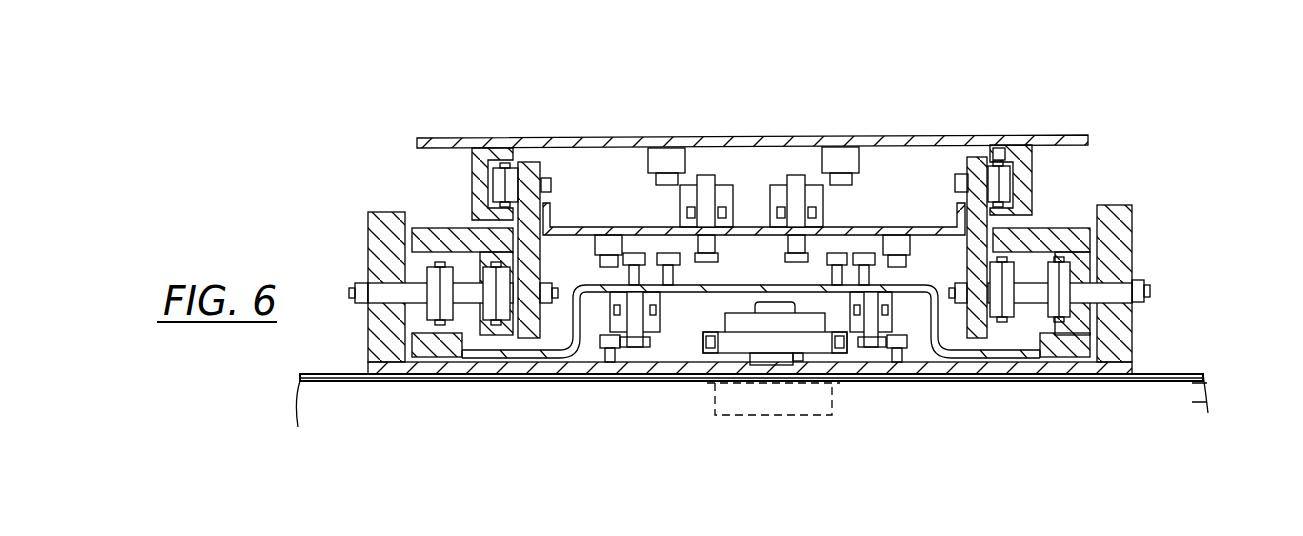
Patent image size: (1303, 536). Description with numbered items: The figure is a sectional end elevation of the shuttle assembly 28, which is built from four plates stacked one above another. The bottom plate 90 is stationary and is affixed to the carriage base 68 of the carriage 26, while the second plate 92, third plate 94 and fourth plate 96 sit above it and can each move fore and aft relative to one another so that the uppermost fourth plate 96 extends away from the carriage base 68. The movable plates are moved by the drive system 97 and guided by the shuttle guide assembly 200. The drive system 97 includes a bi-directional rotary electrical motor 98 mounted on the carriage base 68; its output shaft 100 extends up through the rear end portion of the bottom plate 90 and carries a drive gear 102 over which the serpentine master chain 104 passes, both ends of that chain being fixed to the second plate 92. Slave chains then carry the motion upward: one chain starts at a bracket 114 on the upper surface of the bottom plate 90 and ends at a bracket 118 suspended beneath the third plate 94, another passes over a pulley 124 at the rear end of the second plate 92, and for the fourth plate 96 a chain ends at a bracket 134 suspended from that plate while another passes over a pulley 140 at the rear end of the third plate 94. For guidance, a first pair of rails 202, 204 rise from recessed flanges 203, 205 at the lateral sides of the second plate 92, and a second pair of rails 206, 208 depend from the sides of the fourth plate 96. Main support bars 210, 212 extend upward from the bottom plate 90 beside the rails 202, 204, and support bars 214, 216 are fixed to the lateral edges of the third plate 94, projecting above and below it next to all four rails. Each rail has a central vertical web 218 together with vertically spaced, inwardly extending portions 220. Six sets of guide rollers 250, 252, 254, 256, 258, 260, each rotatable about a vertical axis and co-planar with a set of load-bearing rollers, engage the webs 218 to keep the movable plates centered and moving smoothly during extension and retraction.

The shuttle assembly 28 is at (1122, 122).
The carriage 26 is at (1207, 383).
The carriage base 68 is at (1207, 402).
The bottom plate 90 is at (1130, 366).
The second plate 92 is at (768, 286).
The third plate 94 is at (628, 228).
The fourth plate 96 is at (434, 138).
The drive system 97 is at (697, 365).
The bi-directional rotary electrical motor 98 is at (840, 410).
The output shaft 100 is at (757, 307).
The drive gear 102 is at (700, 345).
The chain 104 is at (850, 337).
The bracket 114 is at (610, 347).
The bracket 118 is at (595, 247).
The pulley 124 is at (628, 265).
The bracket 134 is at (667, 152).
The pulley 140 is at (793, 198).
The shuttle guide assembly 200 is at (405, 352).
The rail 202 is at (468, 322).
The recessed flange 203 is at (515, 355).
The rail 204 is at (1033, 347).
The recessed flange 205 is at (1047, 318).
The rail 206 is at (492, 158).
The rail 208 is at (1022, 148).
The main support bar 210 is at (368, 229).
The main support bar 212 is at (1132, 224).
The support bar 214 is at (532, 162).
The support bar 216 is at (956, 212).
The central vertical web 218 is at (475, 320).
The notch 220 is at (999, 148).
The guide rollers 250 is at (430, 300).
The guide rollers 252 is at (1073, 288).
The guide rollers 254 is at (490, 290).
The guide rollers 256 is at (1043, 260).
The guide rollers 258 is at (488, 185).
The guide rollers 260 is at (1010, 183).